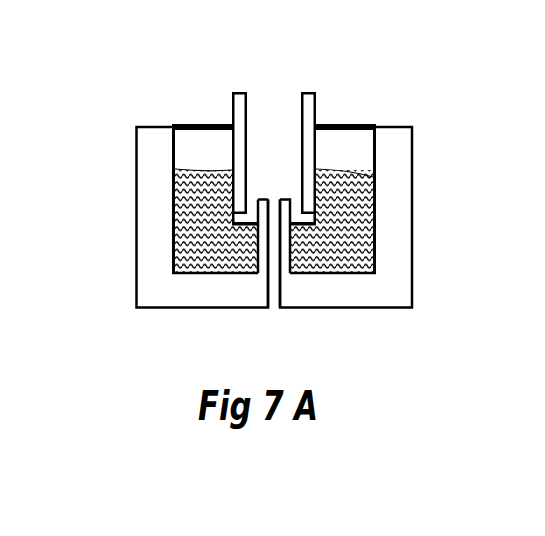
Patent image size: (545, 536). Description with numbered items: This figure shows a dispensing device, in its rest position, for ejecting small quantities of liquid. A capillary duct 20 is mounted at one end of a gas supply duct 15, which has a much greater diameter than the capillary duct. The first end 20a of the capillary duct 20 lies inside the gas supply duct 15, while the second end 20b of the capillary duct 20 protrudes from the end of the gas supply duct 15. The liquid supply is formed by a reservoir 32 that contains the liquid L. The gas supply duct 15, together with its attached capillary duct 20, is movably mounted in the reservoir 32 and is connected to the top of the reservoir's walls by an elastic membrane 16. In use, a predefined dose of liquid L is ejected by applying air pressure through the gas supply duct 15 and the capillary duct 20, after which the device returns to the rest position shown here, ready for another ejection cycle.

The gas supply duct 15 is at (317, 116).
The elastic membrane 16 is at (205, 126).
The capillary duct 20 is at (295, 248).
The first end of the capillary duct 20a is at (257, 198).
The second end of the capillary duct 20b is at (252, 273).
The reservoir 32 is at (413, 193).
The liquid L is at (375, 238).